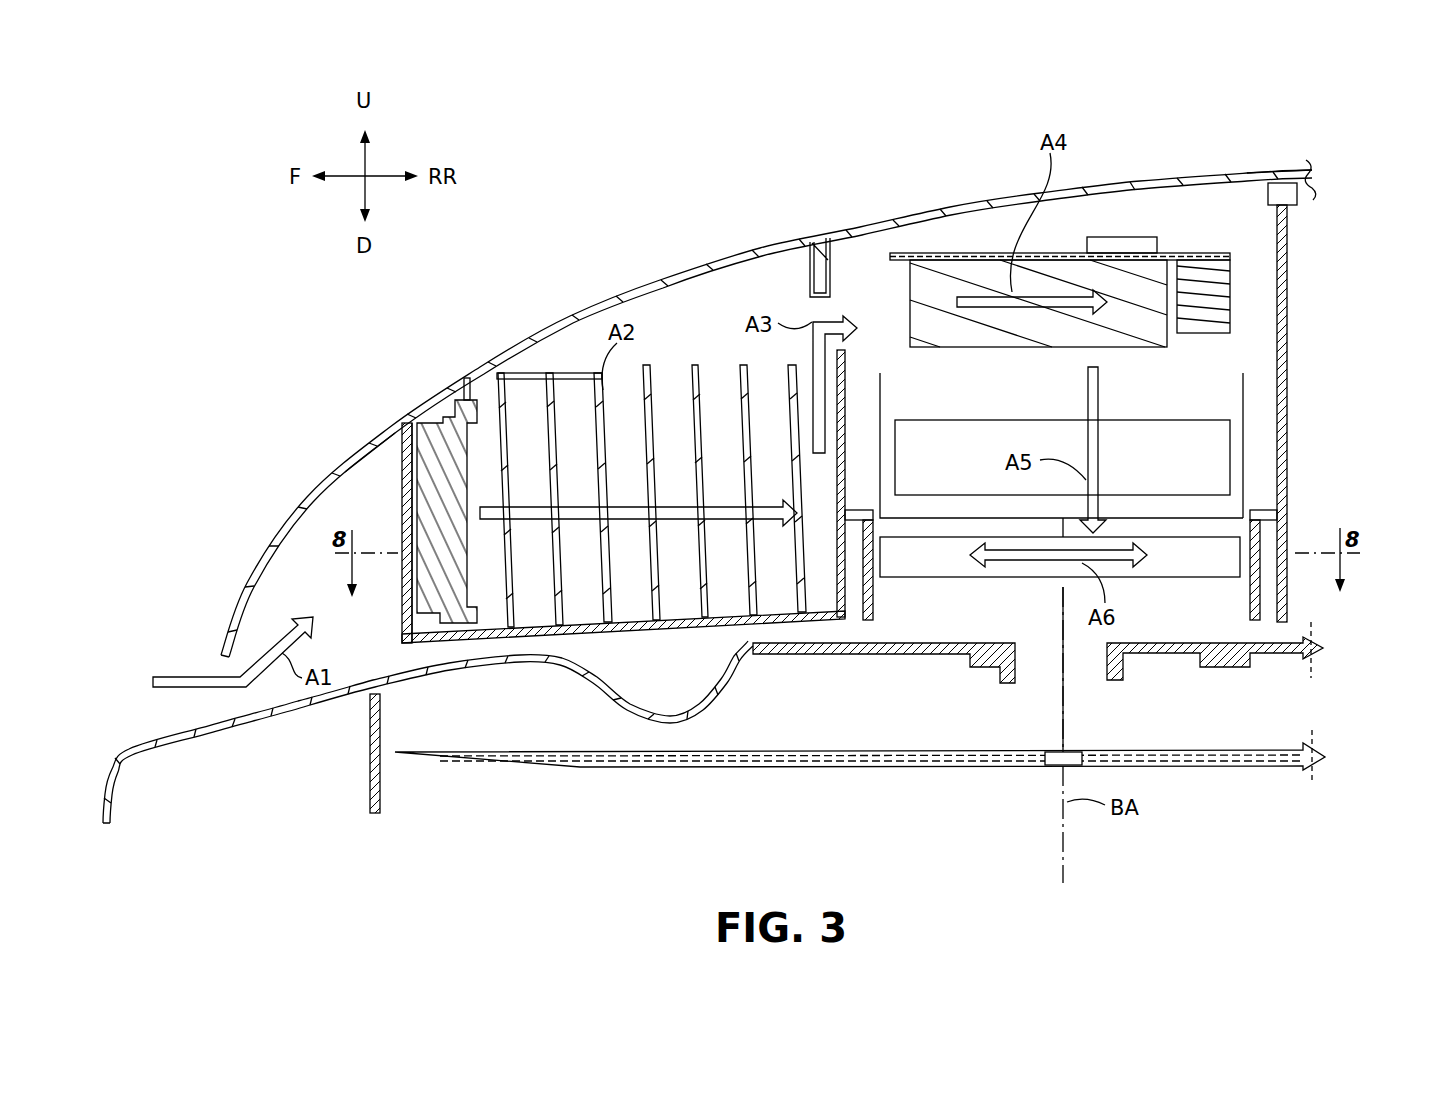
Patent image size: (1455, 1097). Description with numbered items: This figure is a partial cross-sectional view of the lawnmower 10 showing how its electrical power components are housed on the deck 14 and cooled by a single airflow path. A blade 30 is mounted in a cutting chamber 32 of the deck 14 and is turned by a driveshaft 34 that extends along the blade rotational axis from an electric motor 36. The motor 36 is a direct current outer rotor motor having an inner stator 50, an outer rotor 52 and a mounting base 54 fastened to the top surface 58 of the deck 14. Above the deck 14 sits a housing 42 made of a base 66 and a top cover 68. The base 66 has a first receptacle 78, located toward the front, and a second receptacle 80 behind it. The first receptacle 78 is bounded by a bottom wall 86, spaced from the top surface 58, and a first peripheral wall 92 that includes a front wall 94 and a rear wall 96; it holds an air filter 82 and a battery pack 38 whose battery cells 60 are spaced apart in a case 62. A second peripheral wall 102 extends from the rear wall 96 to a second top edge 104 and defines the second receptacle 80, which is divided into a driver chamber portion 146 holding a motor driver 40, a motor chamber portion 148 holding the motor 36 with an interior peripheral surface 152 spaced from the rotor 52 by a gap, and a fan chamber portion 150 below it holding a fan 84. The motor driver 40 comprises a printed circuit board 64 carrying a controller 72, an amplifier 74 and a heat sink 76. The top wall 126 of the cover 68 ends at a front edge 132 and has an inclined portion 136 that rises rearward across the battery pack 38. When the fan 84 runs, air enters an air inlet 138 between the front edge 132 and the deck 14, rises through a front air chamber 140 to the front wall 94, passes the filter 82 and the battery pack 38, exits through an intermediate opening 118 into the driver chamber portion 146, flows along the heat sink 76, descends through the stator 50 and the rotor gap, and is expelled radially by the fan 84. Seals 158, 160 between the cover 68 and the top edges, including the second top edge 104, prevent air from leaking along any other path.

The lawnmower 10 is at (256, 459).
The deck 14 is at (150, 784).
The blade 30 is at (560, 763).
The cutting chamber 32 is at (820, 722).
The driveshaft 34 is at (1062, 710).
The electric motor 36 is at (1143, 409).
The battery pack 38 is at (583, 349).
The motor driver 40 is at (993, 239).
The housing 42 is at (772, 372).
The inner stator 50 is at (1042, 435).
The outer rotor 52 is at (1248, 445).
The mounting base 54 is at (1160, 657).
The top surface 58 is at (215, 724).
The battery cell 60 is at (565, 377).
The case 62 is at (693, 373).
The printed circuit board 64 is at (1048, 252).
The base 66 is at (791, 367).
The top cover 68 is at (895, 219).
The controller 72 is at (1121, 241).
The amplifier 74 is at (1233, 290).
The heat sink 76 is at (907, 303).
The first receptacle 78 is at (396, 589).
The second receptacle 80 is at (1288, 301).
The air filter 82 is at (447, 395).
The fan 84 is at (958, 578).
The bottom wall 86 is at (667, 633).
The first peripheral wall 92 is at (612, 581).
The front wall 94 is at (385, 625).
The rear wall 96 is at (850, 370).
The second peripheral wall 102 is at (1290, 357).
The second top edge 104 is at (1273, 178).
The intermediate opening 118 is at (836, 303).
The top wall 126 is at (1245, 172).
The front edge 132 is at (215, 660).
The inclined portion 136 is at (368, 433).
The air inlet 138 is at (205, 697).
The front air chamber 140 is at (305, 565).
The driver chamber portion 146 is at (1254, 243).
The motor chamber portion 148 is at (1262, 398).
The fan chamber portion 150 is at (1213, 593).
The interior peripheral surface 152 is at (895, 437).
The sealed relationship 158 is at (393, 430).
The sealed relationship 160 is at (1305, 192).